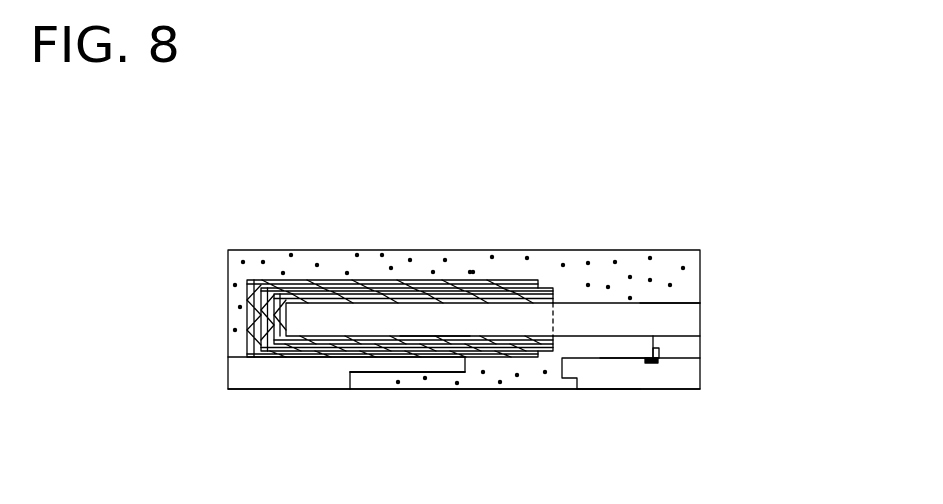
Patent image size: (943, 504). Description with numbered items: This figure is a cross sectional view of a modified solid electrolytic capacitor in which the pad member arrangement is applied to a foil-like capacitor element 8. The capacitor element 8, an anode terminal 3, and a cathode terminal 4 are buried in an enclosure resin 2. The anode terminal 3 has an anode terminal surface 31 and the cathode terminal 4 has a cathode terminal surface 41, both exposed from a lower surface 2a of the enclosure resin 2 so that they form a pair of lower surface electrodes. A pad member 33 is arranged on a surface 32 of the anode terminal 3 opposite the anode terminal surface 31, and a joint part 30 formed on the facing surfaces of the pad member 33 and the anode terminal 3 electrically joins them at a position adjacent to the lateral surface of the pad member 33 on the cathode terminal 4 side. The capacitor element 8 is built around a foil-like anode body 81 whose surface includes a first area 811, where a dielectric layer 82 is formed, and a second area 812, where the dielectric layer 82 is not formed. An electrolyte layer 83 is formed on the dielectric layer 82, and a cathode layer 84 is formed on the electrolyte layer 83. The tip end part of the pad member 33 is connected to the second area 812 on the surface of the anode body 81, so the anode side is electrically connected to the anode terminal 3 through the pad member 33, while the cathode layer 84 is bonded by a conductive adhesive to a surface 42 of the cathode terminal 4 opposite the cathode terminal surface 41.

The enclosure resin 2 is at (633, 270).
The lower surface of the enclosure resin 2a is at (493, 390).
The anode terminal 3 is at (688, 380).
The joint part 30 is at (657, 352).
The anode terminal surface 31 is at (592, 390).
The surface of the anode terminal 32 is at (617, 358).
The pad member 33 is at (680, 347).
The cathode terminal 4 is at (292, 375).
The cathode terminal surface 41 is at (253, 390).
The surface of the cathode terminal 42 is at (348, 353).
The foil-like capacitor element 8 is at (472, 162).
The foil-like anode body 81 is at (464, 318).
The first area 811 is at (438, 350).
The second area 812 is at (689, 294).
The dielectric layer 82 is at (412, 297).
The electrolyte layer 83 is at (375, 292).
The cathode layer 84 is at (360, 283).